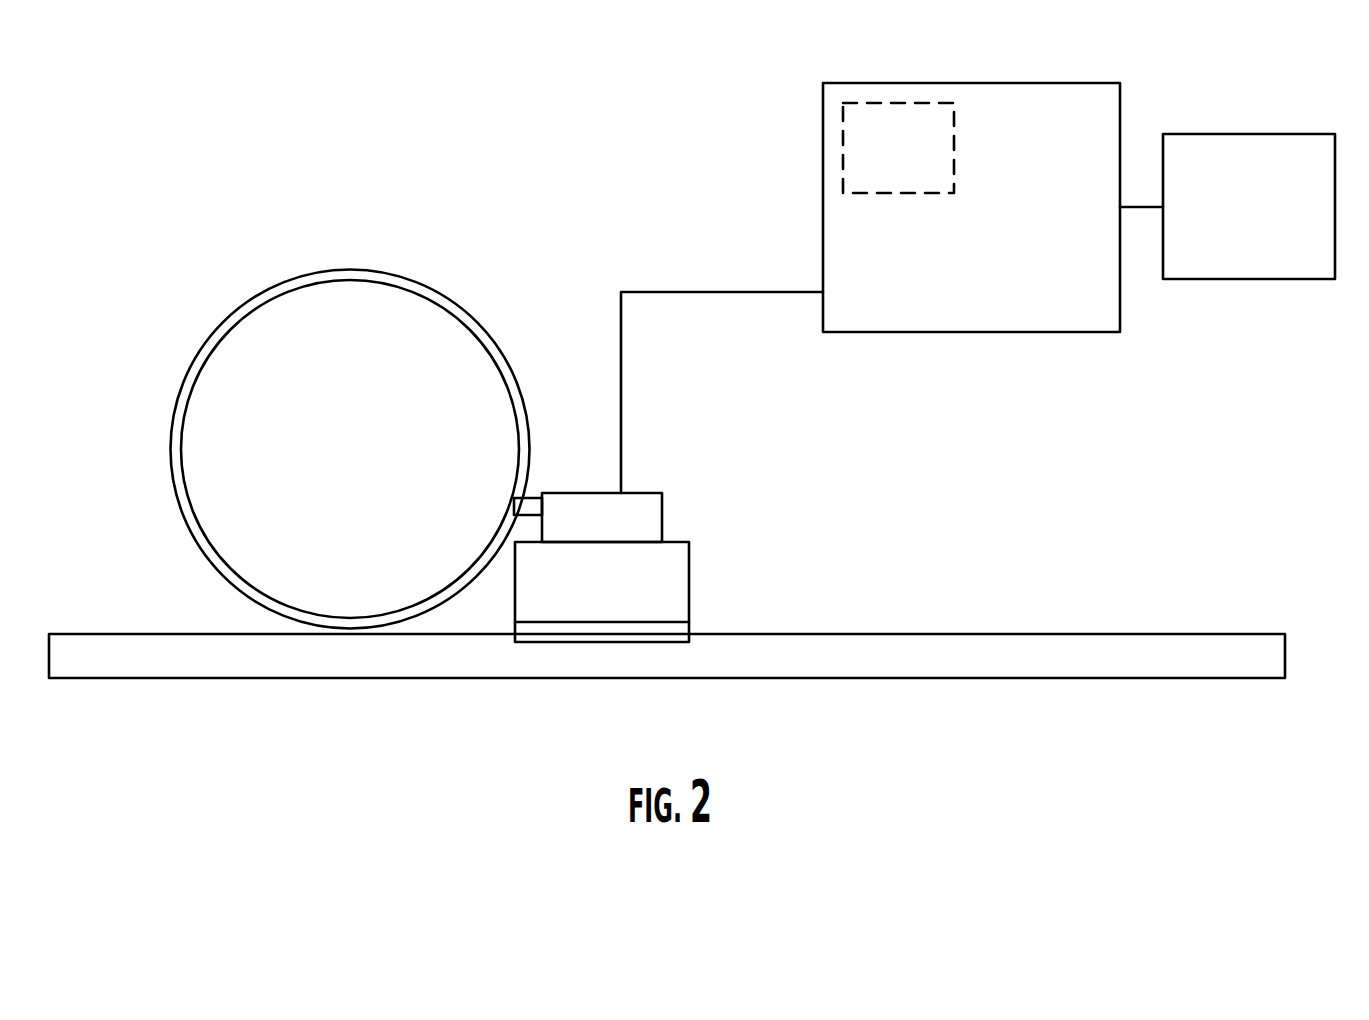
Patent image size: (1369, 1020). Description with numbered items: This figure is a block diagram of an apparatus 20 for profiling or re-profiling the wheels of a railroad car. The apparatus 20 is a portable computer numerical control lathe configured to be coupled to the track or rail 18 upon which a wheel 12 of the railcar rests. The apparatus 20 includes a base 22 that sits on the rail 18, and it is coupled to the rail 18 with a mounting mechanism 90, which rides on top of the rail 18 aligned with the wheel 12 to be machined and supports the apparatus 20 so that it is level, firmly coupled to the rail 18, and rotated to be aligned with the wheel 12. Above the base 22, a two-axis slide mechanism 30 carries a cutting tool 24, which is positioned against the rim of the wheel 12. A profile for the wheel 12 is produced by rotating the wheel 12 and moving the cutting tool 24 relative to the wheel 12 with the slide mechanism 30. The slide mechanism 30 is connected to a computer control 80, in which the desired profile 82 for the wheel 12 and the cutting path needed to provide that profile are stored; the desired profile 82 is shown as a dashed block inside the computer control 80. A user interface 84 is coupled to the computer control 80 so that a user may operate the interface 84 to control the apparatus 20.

The wheel 12 is at (232, 313).
The track or rail 18 is at (1098, 634).
The apparatus 20 is at (682, 435).
The base 22 is at (689, 573).
The cutting tool 24 is at (532, 495).
The 2-axis slide mechanism 30 is at (662, 508).
The computer control 80 is at (1036, 332).
The desired profile 82 is at (840, 152).
The interface 84 is at (1248, 279).
The mounting mechanism 90 is at (689, 628).